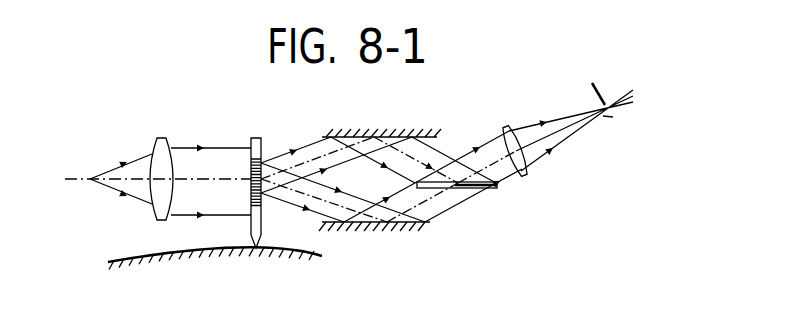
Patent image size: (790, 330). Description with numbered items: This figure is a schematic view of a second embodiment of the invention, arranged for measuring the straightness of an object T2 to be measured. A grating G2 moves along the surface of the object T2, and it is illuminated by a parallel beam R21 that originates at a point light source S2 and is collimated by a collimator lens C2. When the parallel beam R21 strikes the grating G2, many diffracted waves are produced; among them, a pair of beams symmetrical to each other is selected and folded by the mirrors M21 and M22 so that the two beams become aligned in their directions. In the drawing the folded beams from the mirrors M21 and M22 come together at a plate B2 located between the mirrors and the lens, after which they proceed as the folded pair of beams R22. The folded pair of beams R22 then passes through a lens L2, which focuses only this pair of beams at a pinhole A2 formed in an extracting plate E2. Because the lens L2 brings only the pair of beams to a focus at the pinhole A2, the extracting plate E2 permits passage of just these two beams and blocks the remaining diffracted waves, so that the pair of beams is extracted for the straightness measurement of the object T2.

The point light source S2 is at (158, 176).
The collimator lens C2 is at (159, 137).
The parallel beam R21 is at (214, 148).
The grating G2 is at (254, 137).
The mirror M21 is at (385, 137).
The mirror M22 is at (418, 224).
The beam splitter B2 is at (488, 190).
The folded pair of beams R22 is at (490, 143).
The lens L2 is at (526, 172).
The pinhole A2 is at (611, 105).
The extracting plate E2 is at (612, 120).
The object to be measured T2 is at (229, 252).